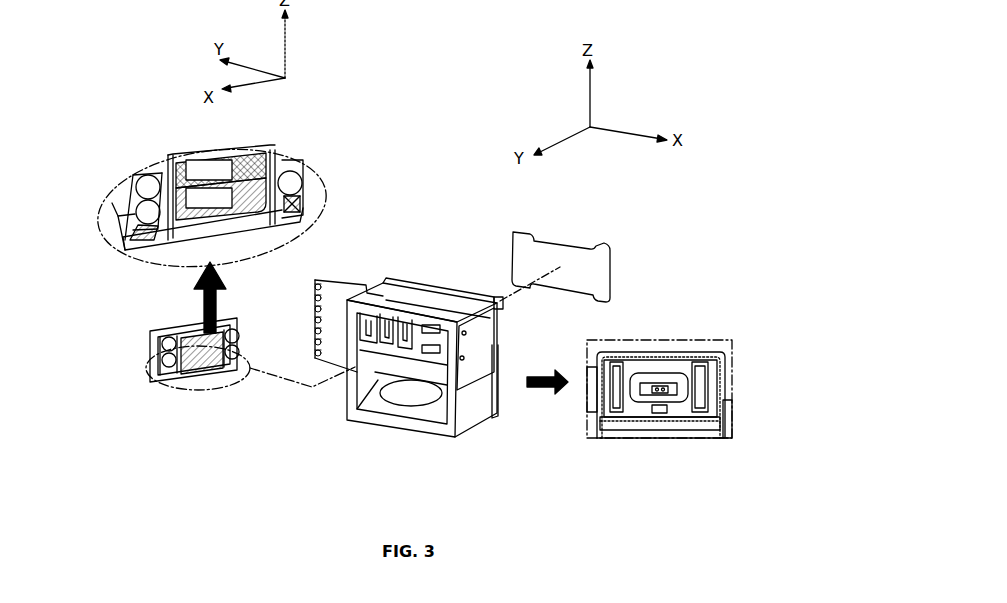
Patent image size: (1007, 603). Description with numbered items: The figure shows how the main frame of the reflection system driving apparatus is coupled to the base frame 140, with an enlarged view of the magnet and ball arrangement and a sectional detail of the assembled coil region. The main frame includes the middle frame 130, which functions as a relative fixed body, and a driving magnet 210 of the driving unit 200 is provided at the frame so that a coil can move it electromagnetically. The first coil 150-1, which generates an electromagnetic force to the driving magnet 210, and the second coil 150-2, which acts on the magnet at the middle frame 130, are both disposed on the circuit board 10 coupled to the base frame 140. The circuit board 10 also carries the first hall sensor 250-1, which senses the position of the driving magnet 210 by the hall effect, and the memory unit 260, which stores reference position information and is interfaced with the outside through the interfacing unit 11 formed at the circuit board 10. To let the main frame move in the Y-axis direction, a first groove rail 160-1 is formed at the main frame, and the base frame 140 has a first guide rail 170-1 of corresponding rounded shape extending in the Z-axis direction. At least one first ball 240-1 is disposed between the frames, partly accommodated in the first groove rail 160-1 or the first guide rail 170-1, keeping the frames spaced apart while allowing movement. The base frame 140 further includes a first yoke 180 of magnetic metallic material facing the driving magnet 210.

The circuit board 10 is at (337, 290).
The interfacing unit 11 is at (317, 278).
The middle frame 130 is at (193, 323).
The base frame 140 is at (393, 418).
The first coil 150-1 is at (462, 331).
The second coil 150-2 is at (353, 328).
The first groove rail 160-1 is at (147, 232).
The first guide rail 170-1 is at (372, 400).
The first yoke 180 is at (552, 251).
The driving unit 200 is at (248, 268).
The driving magnet 210 is at (187, 163).
The first ball 240-1 is at (148, 208).
The first hall sensor 250-1 is at (430, 312).
The memory unit 260 is at (432, 352).